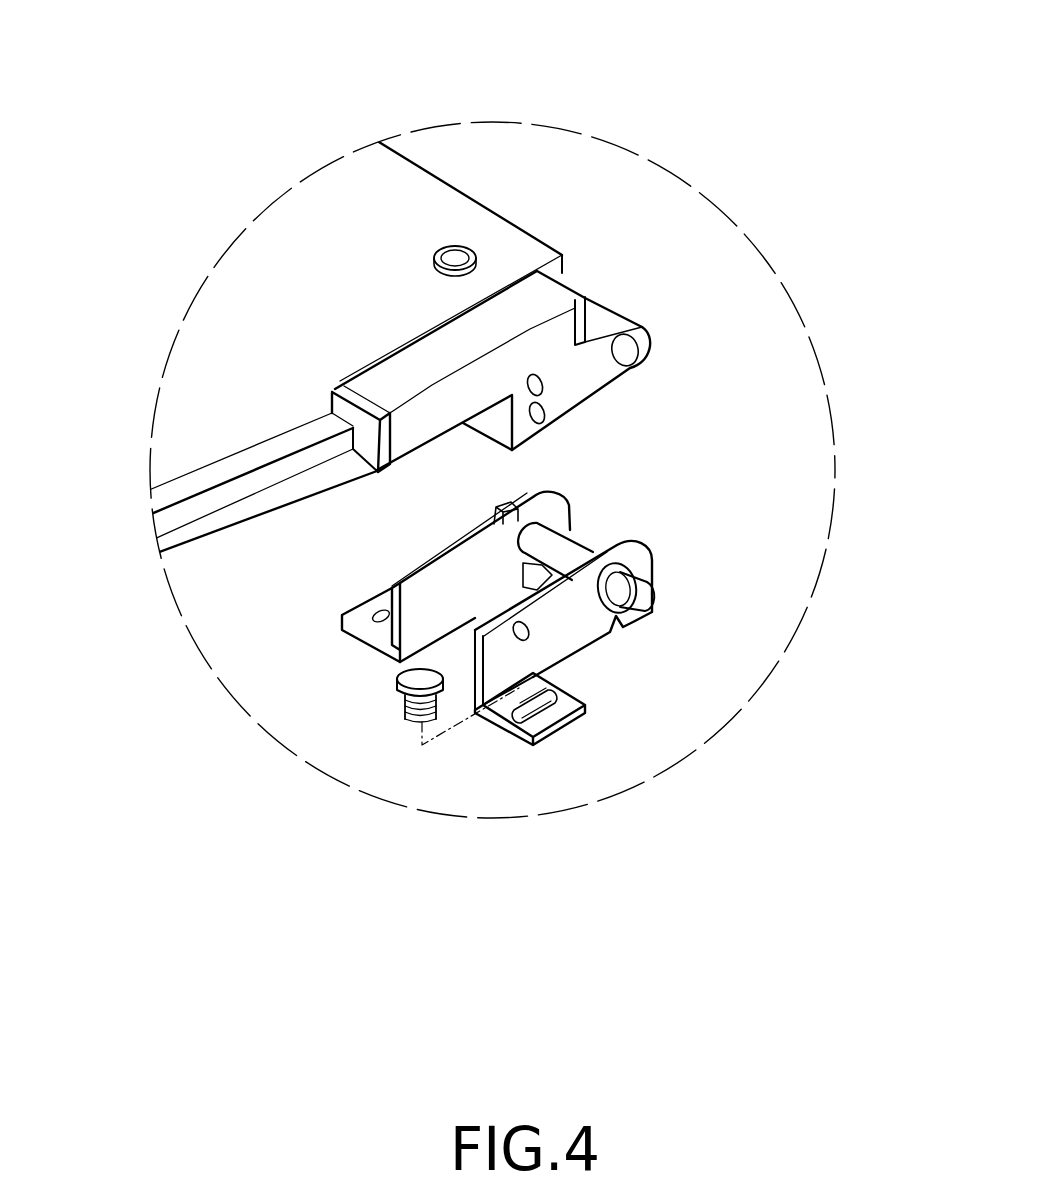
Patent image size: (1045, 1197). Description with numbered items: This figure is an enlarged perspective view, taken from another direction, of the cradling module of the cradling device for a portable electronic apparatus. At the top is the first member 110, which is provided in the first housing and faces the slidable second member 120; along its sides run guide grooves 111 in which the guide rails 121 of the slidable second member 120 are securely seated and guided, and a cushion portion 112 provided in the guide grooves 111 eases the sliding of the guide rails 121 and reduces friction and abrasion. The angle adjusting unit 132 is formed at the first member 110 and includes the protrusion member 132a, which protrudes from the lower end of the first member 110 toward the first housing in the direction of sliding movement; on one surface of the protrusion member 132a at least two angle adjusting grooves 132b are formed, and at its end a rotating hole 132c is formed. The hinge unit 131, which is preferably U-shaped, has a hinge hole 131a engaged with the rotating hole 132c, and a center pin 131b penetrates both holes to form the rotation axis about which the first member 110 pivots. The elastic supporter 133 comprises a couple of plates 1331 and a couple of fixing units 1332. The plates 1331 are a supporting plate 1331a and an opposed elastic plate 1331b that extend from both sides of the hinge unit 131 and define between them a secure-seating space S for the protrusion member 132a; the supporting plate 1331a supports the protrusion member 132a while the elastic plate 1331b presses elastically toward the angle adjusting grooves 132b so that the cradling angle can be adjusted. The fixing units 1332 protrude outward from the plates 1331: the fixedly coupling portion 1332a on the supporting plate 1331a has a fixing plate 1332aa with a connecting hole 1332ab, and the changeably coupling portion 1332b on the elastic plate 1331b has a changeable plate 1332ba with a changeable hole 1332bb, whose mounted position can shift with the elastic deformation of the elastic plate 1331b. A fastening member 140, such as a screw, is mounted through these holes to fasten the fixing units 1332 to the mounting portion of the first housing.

The first member 110 is at (567, 243).
The guide groove 111 is at (322, 423).
The cushion portion 112 is at (565, 293).
The slidable second member 120 is at (317, 242).
The guide rail 121 is at (222, 492).
The hinge unit 131 is at (659, 529).
The hinge hole 131a is at (570, 528).
The center pin 131b is at (570, 555).
The angle adjusting unit 132 is at (662, 399).
The protrusion member 132a is at (563, 403).
The angle adjusting groove 132b is at (541, 384).
The rotating hole 132c is at (622, 353).
The elastic supporter 133 is at (568, 744).
The plates 1331 is at (680, 695).
The supporting plate 1331a is at (508, 585).
The elastic plate 1331b is at (562, 642).
The fixing unit 1332 is at (435, 744).
The fixedly coupling portion 1332a is at (394, 715).
The fixing plate 1332aa is at (365, 622).
The connecting hole 1332ab is at (382, 622).
The changeably coupling portion 1332b is at (563, 739).
The changeable plate 1332ba is at (530, 772).
The changeable hole 1332bb is at (532, 702).
The fastening member 140 is at (422, 678).
The secure-seating space S is at (447, 647).